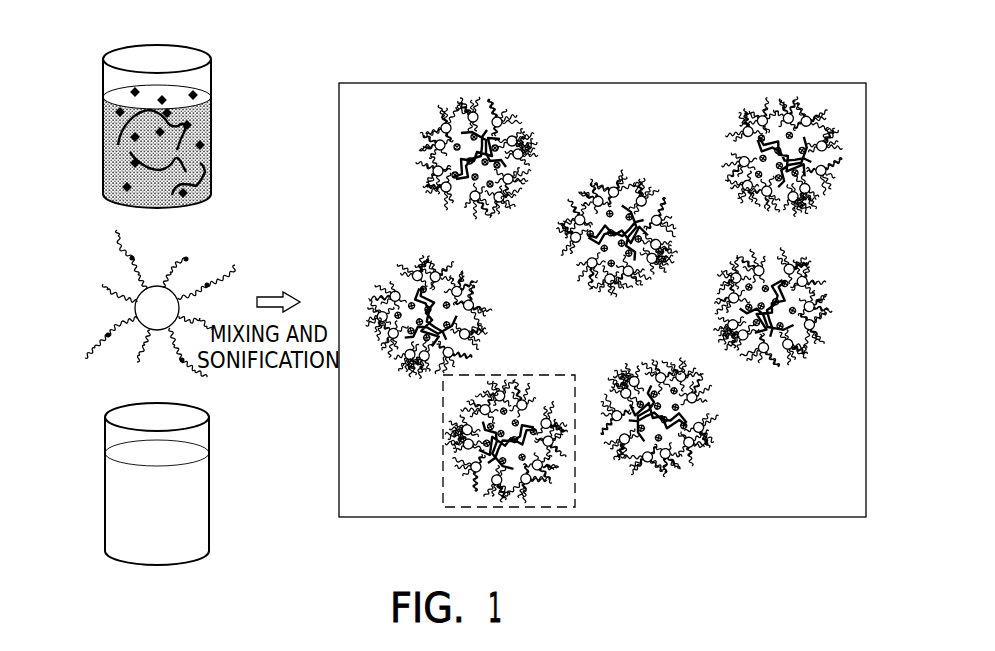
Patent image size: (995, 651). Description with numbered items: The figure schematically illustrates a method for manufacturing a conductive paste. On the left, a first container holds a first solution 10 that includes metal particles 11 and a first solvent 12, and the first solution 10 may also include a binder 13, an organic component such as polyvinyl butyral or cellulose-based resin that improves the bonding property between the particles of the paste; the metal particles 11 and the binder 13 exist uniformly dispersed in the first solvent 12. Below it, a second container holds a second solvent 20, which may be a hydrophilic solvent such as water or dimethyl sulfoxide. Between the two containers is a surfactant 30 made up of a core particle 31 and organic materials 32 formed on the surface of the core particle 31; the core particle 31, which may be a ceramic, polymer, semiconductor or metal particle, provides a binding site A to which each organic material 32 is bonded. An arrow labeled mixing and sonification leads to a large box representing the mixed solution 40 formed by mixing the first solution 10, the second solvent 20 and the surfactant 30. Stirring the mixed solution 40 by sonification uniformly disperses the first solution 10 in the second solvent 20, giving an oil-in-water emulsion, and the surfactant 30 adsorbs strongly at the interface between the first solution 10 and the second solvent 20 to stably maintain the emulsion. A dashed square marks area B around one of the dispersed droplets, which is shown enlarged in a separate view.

The first solution 10 is at (66, 96).
The metal particles 11 is at (116, 111).
The first solvent 12 is at (120, 140).
The binder 13 is at (112, 148).
The second solvent 20 is at (113, 508).
The surfactant 30 is at (66, 284).
The core particles 31 is at (135, 318).
The organic materials 32 is at (108, 335).
The mixed solution 40 is at (703, 83).
The binding site A is at (186, 259).
The area B is at (530, 508).